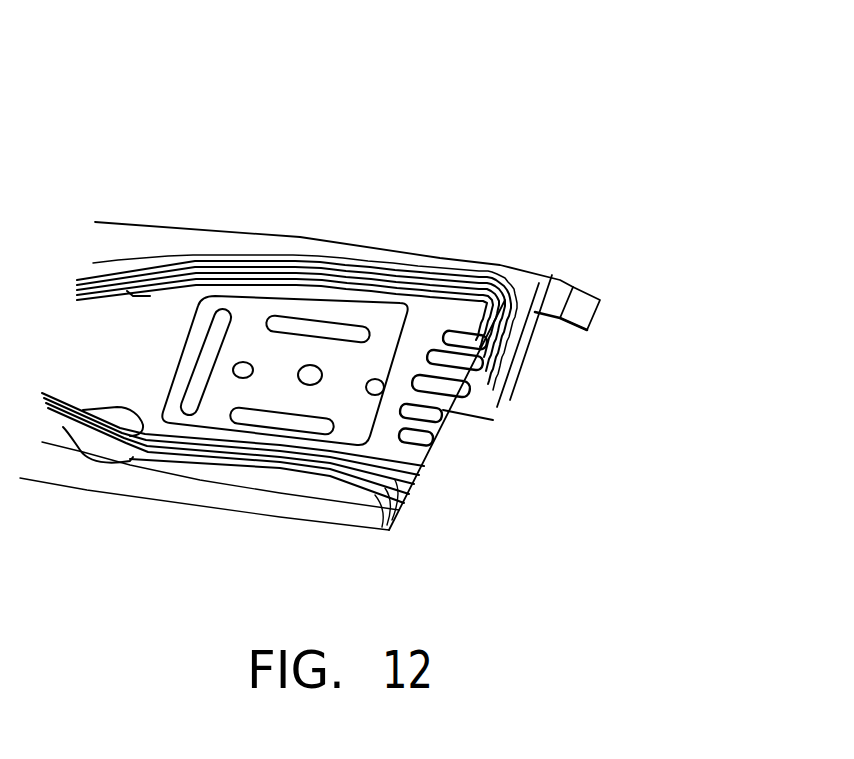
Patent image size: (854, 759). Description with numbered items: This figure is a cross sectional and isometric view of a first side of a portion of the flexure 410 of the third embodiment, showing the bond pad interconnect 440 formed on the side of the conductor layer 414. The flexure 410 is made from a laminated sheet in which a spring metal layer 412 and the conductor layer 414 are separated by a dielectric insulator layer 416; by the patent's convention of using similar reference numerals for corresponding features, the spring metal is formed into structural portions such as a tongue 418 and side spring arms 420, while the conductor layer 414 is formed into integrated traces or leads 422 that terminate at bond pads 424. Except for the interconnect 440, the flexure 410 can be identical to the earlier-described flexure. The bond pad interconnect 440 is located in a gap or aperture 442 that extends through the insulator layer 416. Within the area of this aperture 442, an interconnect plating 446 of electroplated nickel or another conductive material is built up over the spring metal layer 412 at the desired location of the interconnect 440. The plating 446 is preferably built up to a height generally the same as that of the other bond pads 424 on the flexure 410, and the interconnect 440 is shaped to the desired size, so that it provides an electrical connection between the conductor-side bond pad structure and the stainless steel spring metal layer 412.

The flexure 410 is at (628, 294).
The spring metal layer 412 is at (503, 363).
The conductor layer 414 is at (317, 477).
The insulator layer 416 is at (280, 325).
The mounting plate 418 is at (286, 402).
The frame member 420 is at (298, 232).
The contact bracket 422 is at (447, 360).
The bond pads 424 is at (530, 283).
The bond pad interconnect 440 is at (464, 395).
The aperture 442 is at (500, 380).
The interconnect plating 446 is at (468, 415).